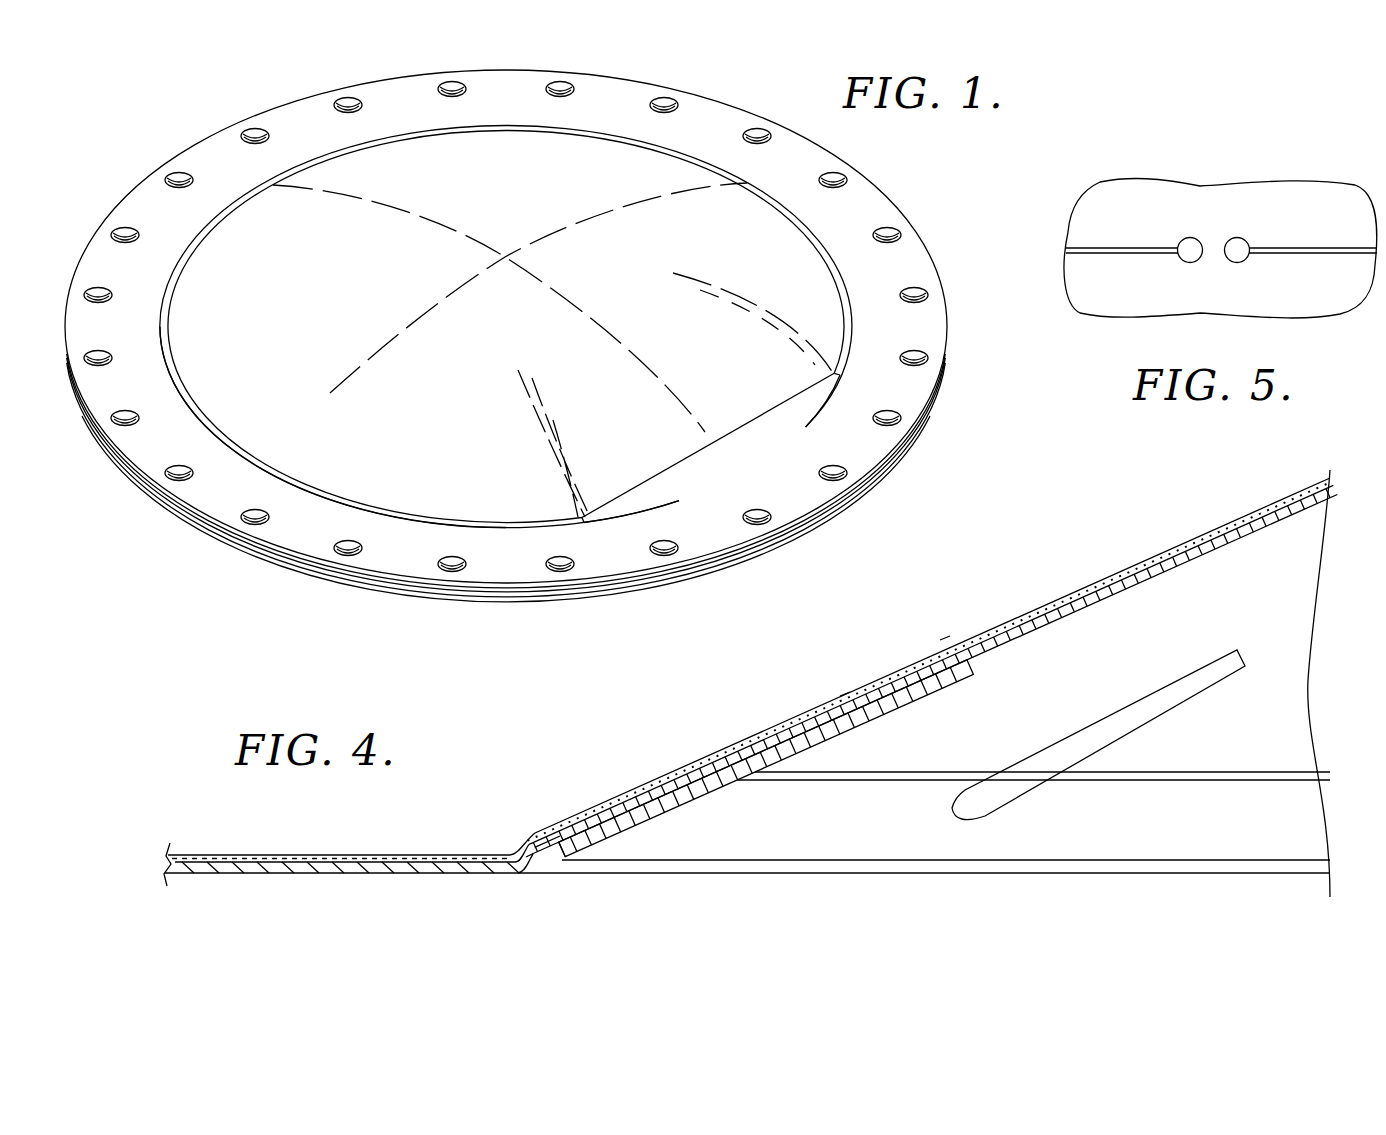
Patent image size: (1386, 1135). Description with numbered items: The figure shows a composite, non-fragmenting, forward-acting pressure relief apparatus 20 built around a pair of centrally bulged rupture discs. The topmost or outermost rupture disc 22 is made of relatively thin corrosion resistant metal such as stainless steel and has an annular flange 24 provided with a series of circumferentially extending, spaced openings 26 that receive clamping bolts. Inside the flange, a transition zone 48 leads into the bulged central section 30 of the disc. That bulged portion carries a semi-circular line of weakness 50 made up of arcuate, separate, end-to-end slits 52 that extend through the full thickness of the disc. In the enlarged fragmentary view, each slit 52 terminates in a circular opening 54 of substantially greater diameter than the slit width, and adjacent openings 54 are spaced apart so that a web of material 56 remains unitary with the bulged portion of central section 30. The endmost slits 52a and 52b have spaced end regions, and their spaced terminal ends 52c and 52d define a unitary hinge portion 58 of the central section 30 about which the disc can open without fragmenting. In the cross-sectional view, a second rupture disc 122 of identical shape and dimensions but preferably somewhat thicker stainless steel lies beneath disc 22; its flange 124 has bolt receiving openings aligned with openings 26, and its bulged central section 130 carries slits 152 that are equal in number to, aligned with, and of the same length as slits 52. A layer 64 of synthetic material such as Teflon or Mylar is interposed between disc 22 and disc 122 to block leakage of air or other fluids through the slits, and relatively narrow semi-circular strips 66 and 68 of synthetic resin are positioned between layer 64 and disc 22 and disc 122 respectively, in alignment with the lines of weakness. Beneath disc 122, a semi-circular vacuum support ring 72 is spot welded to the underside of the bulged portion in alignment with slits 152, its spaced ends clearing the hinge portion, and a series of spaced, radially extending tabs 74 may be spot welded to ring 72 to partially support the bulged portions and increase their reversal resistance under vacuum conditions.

In FIG. 1, the composite pressure relief apparatus 20 is at (895, 160).
In FIG. 1, the rupture disc 22 is at (212, 126).
In FIG. 4, the rupture disc 22 is at (1063, 575).
In FIG. 1, the annular flange 24 is at (906, 266).
In FIG. 4, the annular flange 24 is at (340, 855).
In FIG. 1, the openings 26 is at (946, 346).
In FIG. 1, the central section 30 is at (553, 350).
In FIG. 4, the central section 30 is at (942, 642).
In FIG. 5, the central section 30 is at (1295, 193).
In FIG. 1, the transition zone 48 is at (158, 314).
In FIG. 4, the transition zone 48 is at (514, 855).
In FIG. 1, the line of weakness 50 is at (322, 472).
In FIG. 5, the line of weakness 50 is at (1320, 258).
In FIG. 1, the slits 52 is at (372, 505).
In FIG. 4, the slits 52 is at (592, 810).
In FIG. 5, the slits 52 is at (1147, 247).
In FIG. 1, the end slit 52a is at (637, 500).
In FIG. 1, the end slit 52b is at (812, 404).
In FIG. 1, the terminal end 52c is at (675, 498).
In FIG. 1, the terminal end 52d is at (795, 423).
In FIG. 5, the circular opening 54 is at (1235, 238).
In FIG. 5, the web of material 56 is at (1213, 253).
In FIG. 1, the hinge portion 58 is at (745, 452).
In FIG. 1, the layer of synthetic material 64 is at (580, 592).
In FIG. 4, the layer of synthetic material 64 is at (845, 693).
In FIG. 4, the strip 66 is at (626, 793).
In FIG. 4, the strip 68 is at (550, 858).
In FIG. 4, the vacuum support ring 72 is at (637, 815).
In FIG. 4, the tabs 74 is at (905, 688).
In FIG. 1, the second rupture disc 122 is at (480, 602).
In FIG. 4, the second rupture disc 122 is at (1122, 600).
In FIG. 4, the flange 124 is at (400, 868).
In FIG. 4, the central section 130 is at (1253, 527).
In FIG. 4, the slits 152 is at (600, 828).